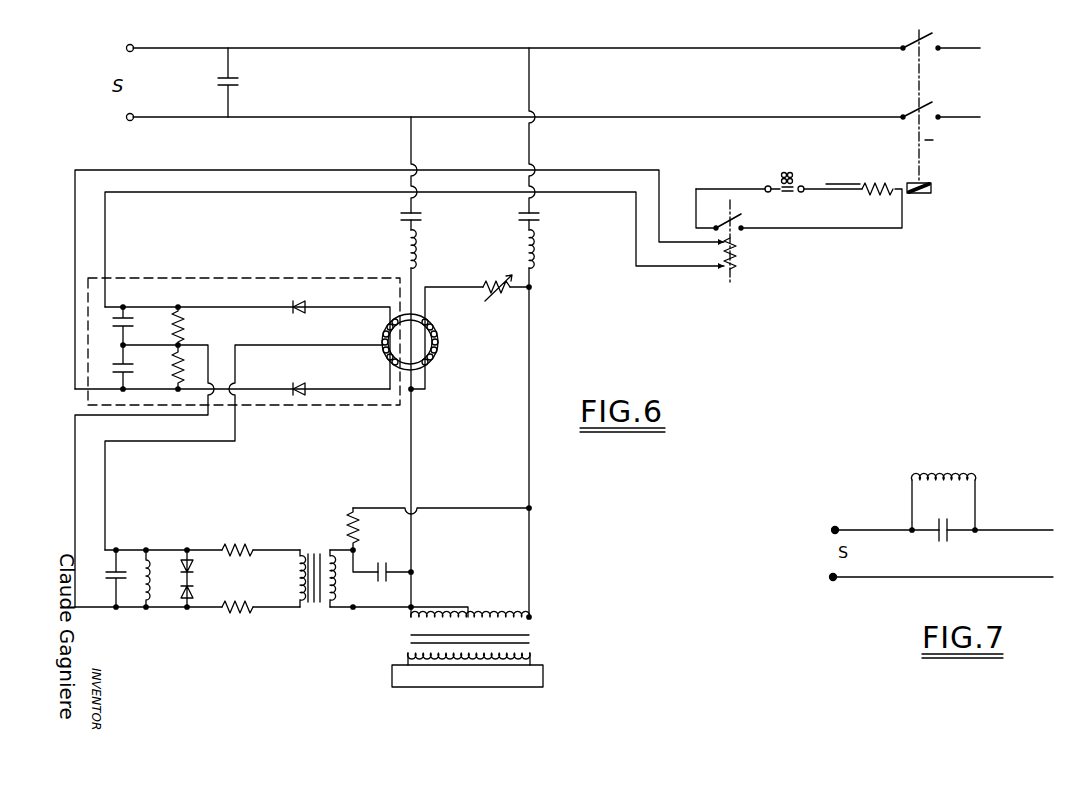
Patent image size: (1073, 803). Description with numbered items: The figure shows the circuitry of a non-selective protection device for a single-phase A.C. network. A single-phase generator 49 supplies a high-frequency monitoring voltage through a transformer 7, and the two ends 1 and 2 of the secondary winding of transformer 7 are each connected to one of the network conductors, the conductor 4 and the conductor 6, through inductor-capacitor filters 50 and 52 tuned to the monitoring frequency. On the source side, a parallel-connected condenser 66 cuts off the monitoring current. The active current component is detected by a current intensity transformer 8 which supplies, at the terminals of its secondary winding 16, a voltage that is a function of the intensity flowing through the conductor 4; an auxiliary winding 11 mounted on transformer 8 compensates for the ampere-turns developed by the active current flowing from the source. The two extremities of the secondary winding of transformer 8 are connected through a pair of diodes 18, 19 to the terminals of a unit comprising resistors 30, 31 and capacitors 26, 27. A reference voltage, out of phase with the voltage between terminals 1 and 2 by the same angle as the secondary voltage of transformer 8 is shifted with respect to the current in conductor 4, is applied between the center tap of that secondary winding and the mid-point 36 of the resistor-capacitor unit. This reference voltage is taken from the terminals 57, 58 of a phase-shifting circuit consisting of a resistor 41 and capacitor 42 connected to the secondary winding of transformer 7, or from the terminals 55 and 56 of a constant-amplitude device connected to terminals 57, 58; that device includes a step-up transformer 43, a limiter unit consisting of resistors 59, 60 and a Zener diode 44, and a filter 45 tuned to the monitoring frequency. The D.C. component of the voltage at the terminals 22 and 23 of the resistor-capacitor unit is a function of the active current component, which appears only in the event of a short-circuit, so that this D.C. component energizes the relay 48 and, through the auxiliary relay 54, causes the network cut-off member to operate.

The end of secondary winding 1 is at (431, 617).
The end of secondary winding 2 is at (535, 615).
The conductor 4 is at (405, 362).
The supply lead 6 is at (536, 332).
The transformer 7 is at (538, 632).
The current intensity transformer 8 is at (426, 367).
The auxiliary winding 11 is at (443, 341).
The secondary winding 16 is at (384, 352).
The diode 18 is at (311, 299).
The diode 19 is at (309, 381).
The terminal 22 is at (247, 337).
The terminal 23 is at (232, 397).
The capacitor 26 is at (112, 326).
The capacitor 27 is at (111, 367).
The resistor 30 is at (190, 326).
The resistor 31 is at (190, 367).
The mid-point 36 is at (192, 346).
The resistor 41 is at (439, 528).
The capacitor 42 is at (395, 584).
The step-up transformer 43 is at (318, 610).
The Zener diode 44 is at (198, 578).
The filter 45 is at (157, 578).
The relay 48 is at (799, 235).
The single-phase generator 49 is at (545, 673).
The inductor-capacitor filter 50 is at (399, 237).
The inductor-capacitor filter 52 is at (542, 236).
The auxiliary relay 54 is at (794, 177).
The outlet terminal 55 is at (544, 291).
The outlet terminal 56 is at (115, 590).
The terminal 57 is at (354, 557).
The terminal 58 is at (370, 618).
The resistor 59 is at (238, 539).
The resistor 60 is at (241, 595).
The condenser 66 is at (240, 82).